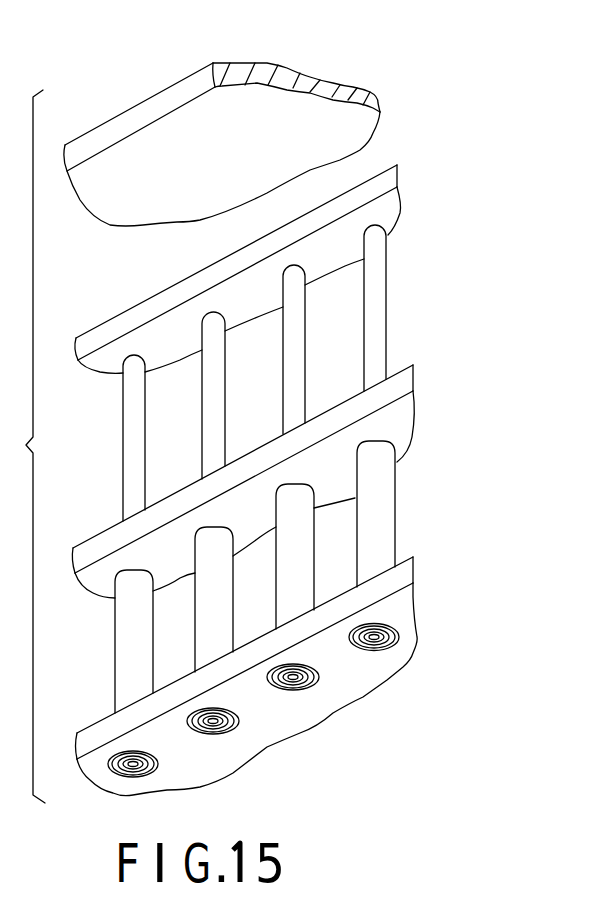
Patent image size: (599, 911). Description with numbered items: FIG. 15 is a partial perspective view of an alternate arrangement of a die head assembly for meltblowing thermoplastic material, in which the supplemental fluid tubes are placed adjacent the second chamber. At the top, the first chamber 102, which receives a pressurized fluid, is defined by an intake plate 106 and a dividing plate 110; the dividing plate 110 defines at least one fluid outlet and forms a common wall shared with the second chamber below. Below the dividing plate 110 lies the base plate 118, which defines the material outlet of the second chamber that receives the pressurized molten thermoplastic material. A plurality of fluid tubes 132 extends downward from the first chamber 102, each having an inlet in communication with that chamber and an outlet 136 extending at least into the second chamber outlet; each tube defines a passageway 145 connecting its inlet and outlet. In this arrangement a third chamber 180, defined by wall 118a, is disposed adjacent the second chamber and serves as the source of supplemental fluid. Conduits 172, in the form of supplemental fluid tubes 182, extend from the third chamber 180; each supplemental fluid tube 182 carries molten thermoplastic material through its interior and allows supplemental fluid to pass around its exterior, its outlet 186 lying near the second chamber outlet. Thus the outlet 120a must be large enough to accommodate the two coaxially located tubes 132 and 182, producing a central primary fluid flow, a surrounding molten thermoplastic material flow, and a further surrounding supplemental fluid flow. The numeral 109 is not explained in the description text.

The first chamber 102 is at (257, 163).
The intake plate 106 is at (312, 78).
The underside of tray 109 is at (252, 393).
The dividing plate 110 is at (385, 182).
The fluid tube 132 is at (383, 318).
The base plate 118 is at (402, 387).
The conduit 172 is at (398, 486).
The supplemental fluid tube 182 is at (387, 513).
The third chamber 180 is at (240, 587).
The wall 118a is at (405, 573).
The outlet 120a is at (419, 589).
The outlet 136 is at (352, 649).
The outlet 186 is at (385, 647).
The passageway 145 is at (374, 640).